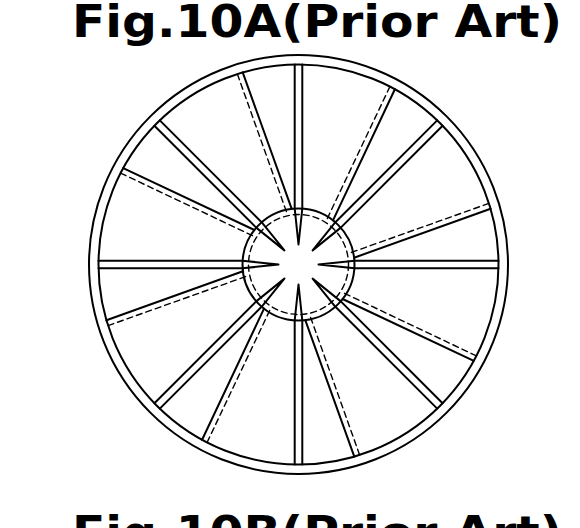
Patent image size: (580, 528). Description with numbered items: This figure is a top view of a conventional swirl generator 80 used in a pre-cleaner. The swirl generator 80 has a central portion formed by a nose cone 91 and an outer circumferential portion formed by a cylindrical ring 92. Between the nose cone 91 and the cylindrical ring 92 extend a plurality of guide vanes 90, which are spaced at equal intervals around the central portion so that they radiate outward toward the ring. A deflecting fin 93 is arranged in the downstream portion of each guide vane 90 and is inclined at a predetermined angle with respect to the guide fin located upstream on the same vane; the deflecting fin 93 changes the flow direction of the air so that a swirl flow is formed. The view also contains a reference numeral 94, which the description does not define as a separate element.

The swirl generator 80 is at (294, 279).
The guide vane 90 is at (432, 137).
The nose cone 91 is at (313, 237).
The cylindrical ring 92 is at (502, 291).
The deflecting fin 93 is at (383, 413).
The blade 94 is at (323, 450).